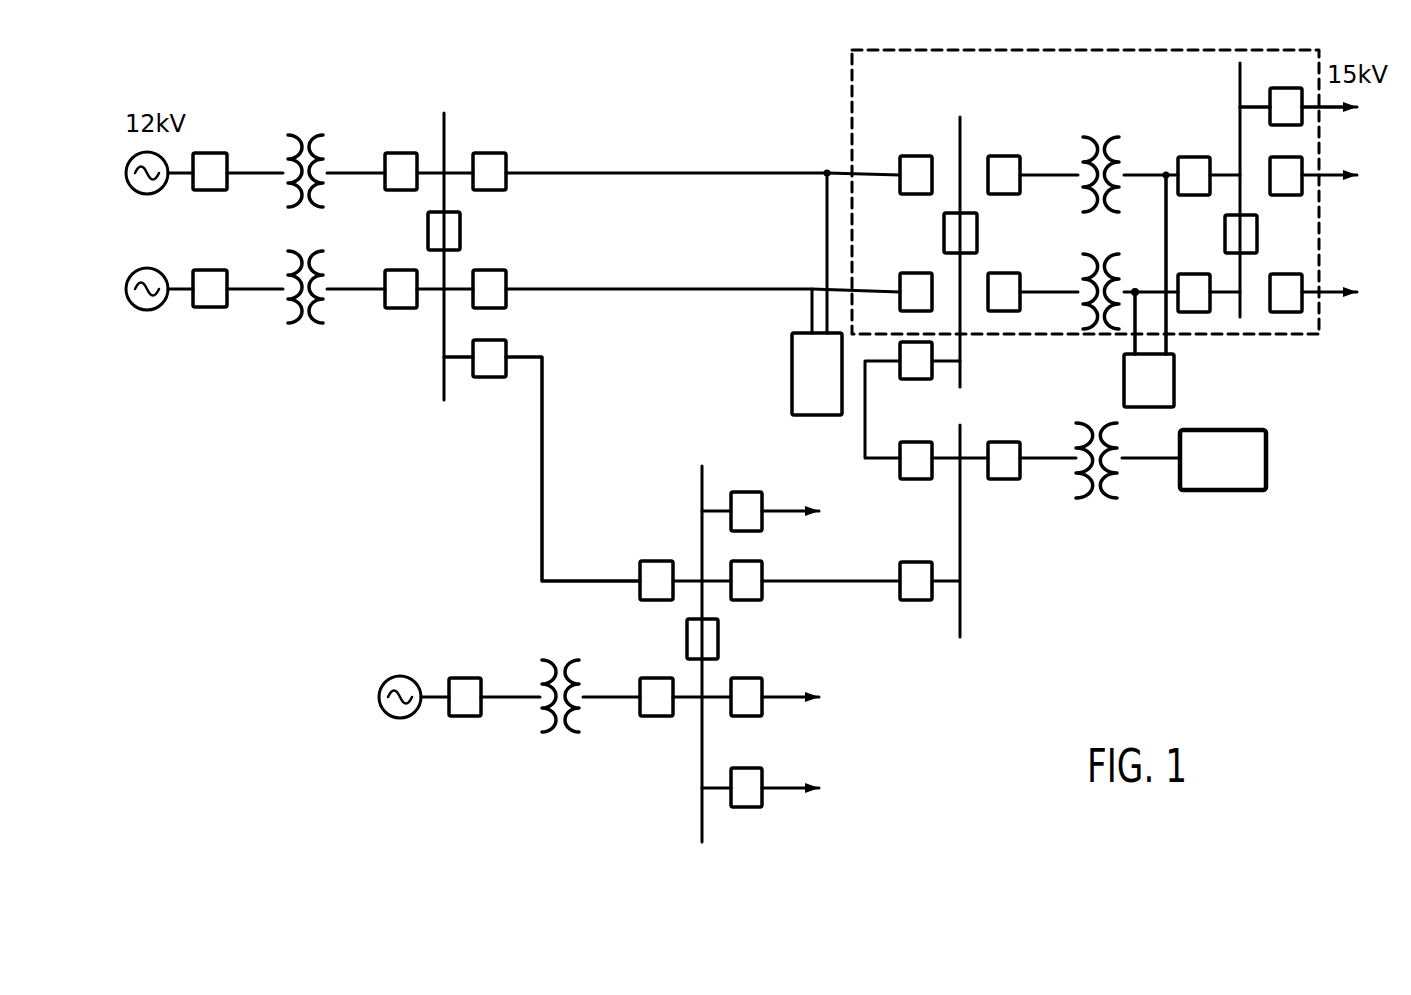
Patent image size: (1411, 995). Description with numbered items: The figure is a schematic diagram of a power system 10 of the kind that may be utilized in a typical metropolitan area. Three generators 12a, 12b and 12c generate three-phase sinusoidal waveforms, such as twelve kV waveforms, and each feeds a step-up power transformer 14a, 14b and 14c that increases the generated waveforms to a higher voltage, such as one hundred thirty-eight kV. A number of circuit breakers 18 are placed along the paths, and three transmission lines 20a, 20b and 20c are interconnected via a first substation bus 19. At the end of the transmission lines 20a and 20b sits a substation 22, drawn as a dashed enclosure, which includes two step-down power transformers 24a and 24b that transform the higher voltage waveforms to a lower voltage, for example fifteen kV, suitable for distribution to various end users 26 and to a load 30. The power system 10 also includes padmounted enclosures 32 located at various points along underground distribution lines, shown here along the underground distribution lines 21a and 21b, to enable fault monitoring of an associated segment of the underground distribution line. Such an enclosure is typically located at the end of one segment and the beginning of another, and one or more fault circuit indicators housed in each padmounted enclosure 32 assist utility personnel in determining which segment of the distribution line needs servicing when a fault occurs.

The power system 10 is at (775, 66).
The generator 12a is at (151, 194).
The generator 12b is at (148, 310).
The generator 12c is at (385, 717).
The step-up power transformer 14a is at (303, 132).
The step-up power transformer 14b is at (305, 320).
The step-up power transformer 14c is at (558, 654).
The circuit breaker 18 is at (488, 191).
The first substation bus 19 is at (443, 130).
The transmission line 20a is at (605, 173).
The transmission line 20b is at (590, 289).
The transmission line 20c is at (544, 505).
The underground distribution line 21a is at (1127, 173).
The underground distribution line 21b is at (1153, 285).
The substation 22 is at (1143, 50).
The step-down power transformer 24a is at (1102, 133).
The step-down power transformer 24b is at (1105, 250).
The end user 26 is at (1333, 112).
The load 30 is at (1267, 459).
The padmounted enclosure 32 is at (792, 362).